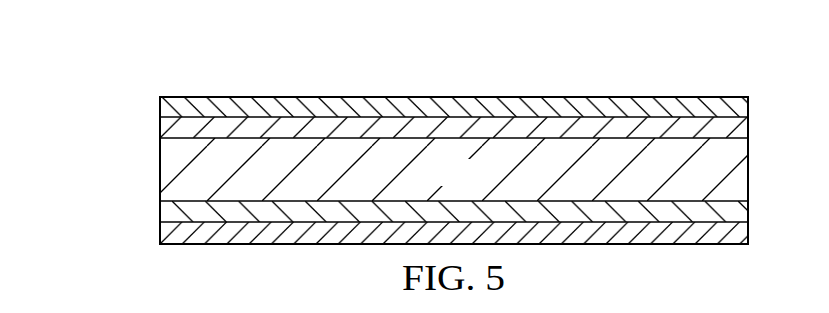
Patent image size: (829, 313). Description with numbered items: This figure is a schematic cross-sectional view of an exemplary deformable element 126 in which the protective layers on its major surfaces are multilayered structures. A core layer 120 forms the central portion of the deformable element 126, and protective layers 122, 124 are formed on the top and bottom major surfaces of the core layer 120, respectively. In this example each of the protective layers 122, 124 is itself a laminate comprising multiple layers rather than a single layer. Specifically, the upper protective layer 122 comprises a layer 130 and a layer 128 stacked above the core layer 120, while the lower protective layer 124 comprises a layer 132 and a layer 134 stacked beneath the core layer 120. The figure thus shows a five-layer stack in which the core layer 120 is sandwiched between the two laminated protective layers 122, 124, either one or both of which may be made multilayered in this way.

The core layer 120 is at (474, 182).
The protective layer 122 is at (390, 117).
The protective layer 124 is at (390, 221).
The deformable element 126 is at (521, 73).
The layer 128 is at (160, 130).
The layer 130 is at (160, 103).
The layer 132 is at (160, 209).
The layer 134 is at (160, 234).